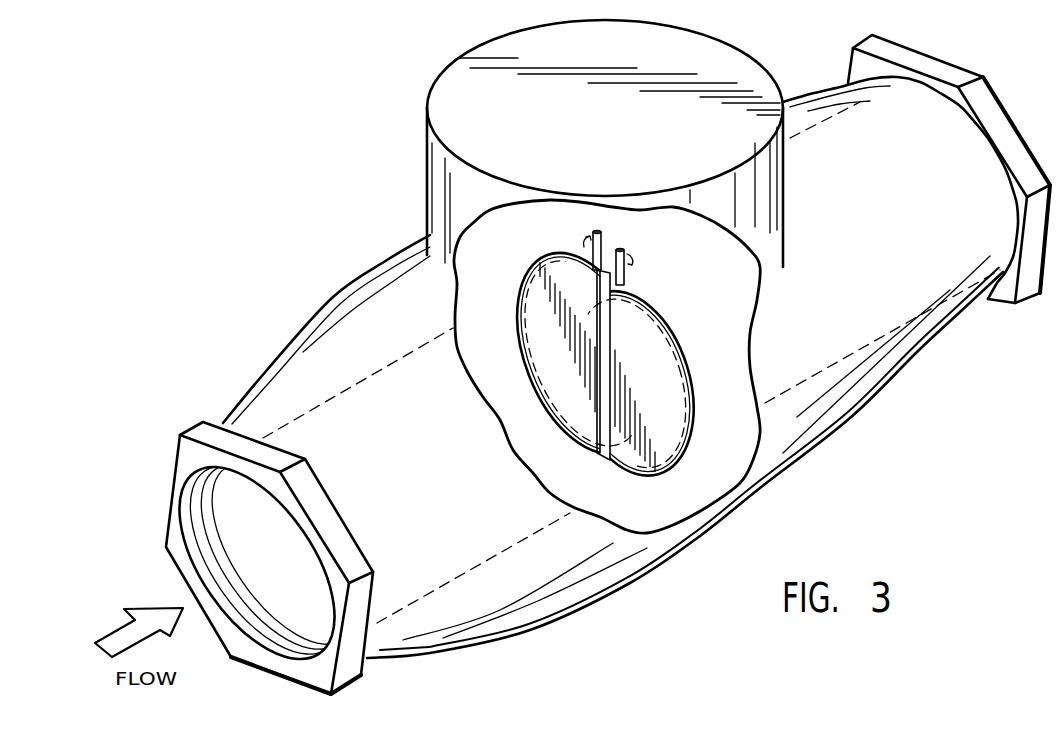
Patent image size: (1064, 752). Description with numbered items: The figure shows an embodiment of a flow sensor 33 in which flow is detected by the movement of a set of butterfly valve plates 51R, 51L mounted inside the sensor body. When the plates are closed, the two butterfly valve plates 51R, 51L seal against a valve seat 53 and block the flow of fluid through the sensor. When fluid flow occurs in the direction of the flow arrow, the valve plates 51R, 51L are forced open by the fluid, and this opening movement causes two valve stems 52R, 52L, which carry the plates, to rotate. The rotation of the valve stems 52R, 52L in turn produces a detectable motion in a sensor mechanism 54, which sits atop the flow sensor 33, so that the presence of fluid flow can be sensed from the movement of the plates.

The flow sensor 33 is at (363, 317).
The sensor mechanism 54 is at (462, 82).
The butterfly valve plate 51L is at (540, 332).
The butterfly valve plate 51R is at (653, 363).
The valve stem 52L is at (597, 232).
The valve stem 52R is at (621, 250).
The valve seat 53 is at (690, 441).